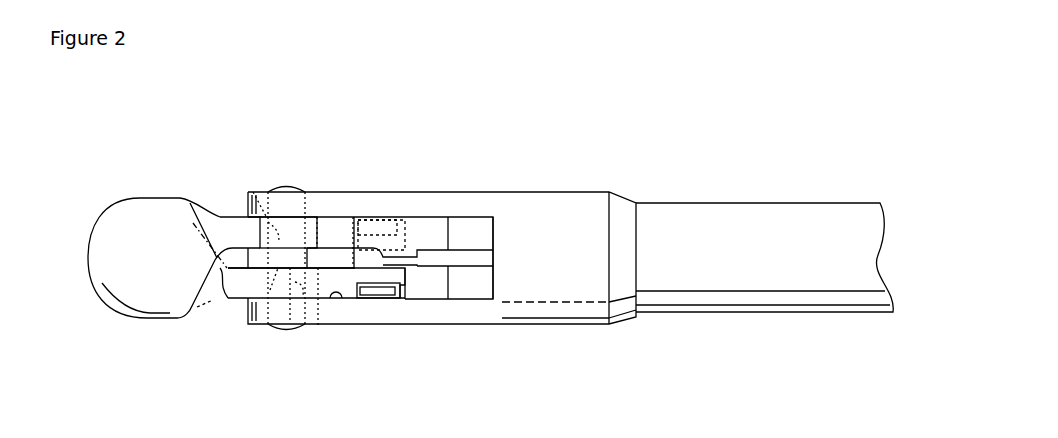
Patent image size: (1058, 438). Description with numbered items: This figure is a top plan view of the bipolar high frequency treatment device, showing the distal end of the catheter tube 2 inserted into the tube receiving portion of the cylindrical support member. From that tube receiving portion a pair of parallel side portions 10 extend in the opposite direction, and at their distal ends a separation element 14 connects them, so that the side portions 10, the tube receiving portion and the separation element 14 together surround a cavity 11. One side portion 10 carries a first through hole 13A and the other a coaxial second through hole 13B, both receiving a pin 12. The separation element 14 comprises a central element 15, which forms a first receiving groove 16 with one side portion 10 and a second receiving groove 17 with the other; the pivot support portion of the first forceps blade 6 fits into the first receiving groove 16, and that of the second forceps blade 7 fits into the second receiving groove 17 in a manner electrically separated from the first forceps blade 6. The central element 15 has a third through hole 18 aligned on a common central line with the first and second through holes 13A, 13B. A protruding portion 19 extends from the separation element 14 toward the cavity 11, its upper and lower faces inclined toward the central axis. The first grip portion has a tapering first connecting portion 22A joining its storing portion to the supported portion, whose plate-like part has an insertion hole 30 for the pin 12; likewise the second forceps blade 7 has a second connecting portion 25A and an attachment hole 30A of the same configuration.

The catheter tube 2 is at (773, 278).
The first forceps blade 6 is at (204, 309).
The second forceps blade 7 is at (165, 176).
The side portions 10 is at (398, 200).
The cavity 11 is at (472, 230).
The pin 12 is at (287, 188).
The first through hole 13A is at (278, 328).
The second through hole 13B is at (275, 188).
The separation element 14 is at (327, 252).
The central element 15 is at (298, 262).
The first receiving groove 16 is at (342, 298).
The second receiving groove 17 is at (300, 232).
The third through hole 18 is at (270, 290).
The protruding portion 19 is at (438, 290).
The first connecting portion 22A is at (209, 300).
The second connecting portion 25A is at (218, 224).
The insertion hole 30 is at (292, 323).
The attachment hole 30A is at (253, 192).